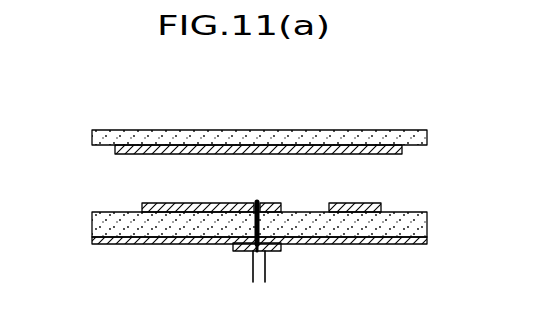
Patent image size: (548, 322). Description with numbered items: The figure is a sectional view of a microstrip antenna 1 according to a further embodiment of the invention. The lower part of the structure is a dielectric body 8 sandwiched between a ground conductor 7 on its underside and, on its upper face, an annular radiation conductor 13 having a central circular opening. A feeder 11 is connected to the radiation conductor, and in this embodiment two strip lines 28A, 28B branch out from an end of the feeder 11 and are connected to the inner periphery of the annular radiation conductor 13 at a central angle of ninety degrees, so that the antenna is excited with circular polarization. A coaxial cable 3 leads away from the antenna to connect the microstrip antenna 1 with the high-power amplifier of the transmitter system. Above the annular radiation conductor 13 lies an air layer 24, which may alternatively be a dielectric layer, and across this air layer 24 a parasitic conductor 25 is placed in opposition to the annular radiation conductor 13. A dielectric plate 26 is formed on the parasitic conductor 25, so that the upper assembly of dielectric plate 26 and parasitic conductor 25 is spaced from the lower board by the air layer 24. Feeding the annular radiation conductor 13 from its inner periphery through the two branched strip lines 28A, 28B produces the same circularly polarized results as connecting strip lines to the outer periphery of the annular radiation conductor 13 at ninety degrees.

The microstrip antenna 1 is at (232, 121).
The dielectric plate 26 is at (92, 133).
The parasitic conductor 25 is at (118, 153).
The air layer 24 is at (402, 170).
The dielectric body 8 is at (288, 259).
The feeder 11 is at (250, 226).
The ground conductor 7 is at (393, 244).
The annular radiation conductor 13 is at (157, 204).
The strip line 28A is at (229, 189).
The strip line 28B is at (262, 209).
The coaxial cable 3 is at (265, 266).